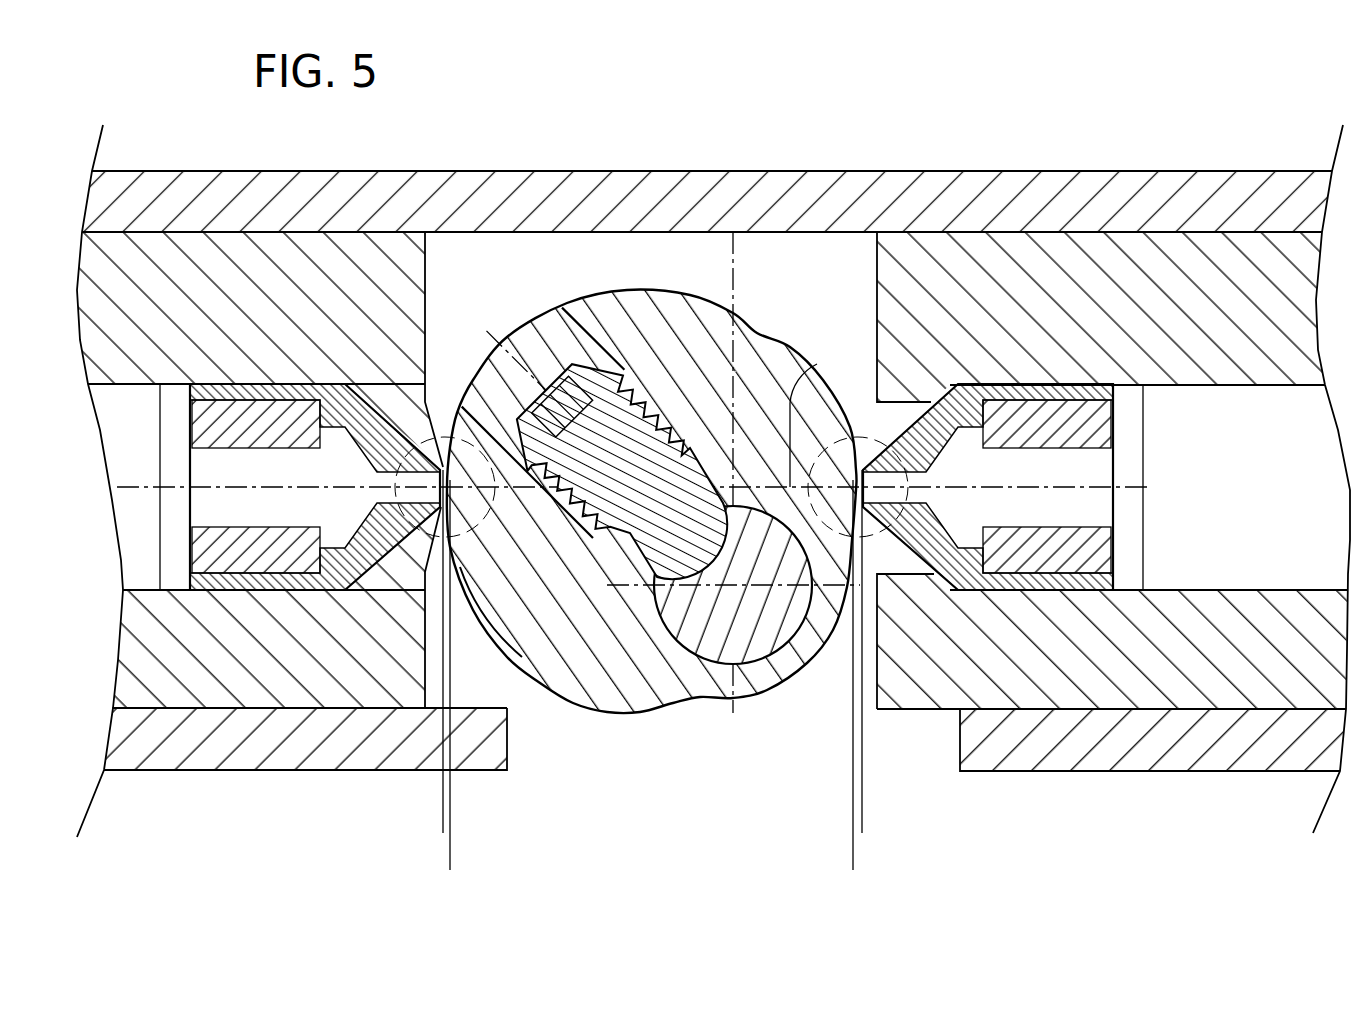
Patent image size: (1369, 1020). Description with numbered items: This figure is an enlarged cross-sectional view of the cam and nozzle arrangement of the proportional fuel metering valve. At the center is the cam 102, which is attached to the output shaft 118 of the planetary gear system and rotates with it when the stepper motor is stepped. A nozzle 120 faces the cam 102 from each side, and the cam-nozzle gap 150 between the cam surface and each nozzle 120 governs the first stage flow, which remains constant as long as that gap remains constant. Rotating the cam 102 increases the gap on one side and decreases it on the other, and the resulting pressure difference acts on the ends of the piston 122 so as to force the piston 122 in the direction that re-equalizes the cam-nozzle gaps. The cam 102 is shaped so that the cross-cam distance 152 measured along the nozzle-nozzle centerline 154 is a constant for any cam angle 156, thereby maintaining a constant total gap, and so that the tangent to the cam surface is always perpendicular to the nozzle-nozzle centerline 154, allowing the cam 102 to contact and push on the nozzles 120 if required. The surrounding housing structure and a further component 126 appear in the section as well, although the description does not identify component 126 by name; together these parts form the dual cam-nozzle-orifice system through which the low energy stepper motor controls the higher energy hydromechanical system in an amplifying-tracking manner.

The cam 102 is at (757, 320).
The output shaft 118 is at (745, 640).
The nozzle 120 is at (273, 398).
The piston 122 is at (300, 250).
The cover plate 126 is at (551, 200).
The cam-nozzle gap 150 is at (497, 808).
The cross-cam distance 152 is at (450, 845).
The nozzle-nozzle centerline 154 is at (803, 374).
The cam angle 156 is at (733, 240).